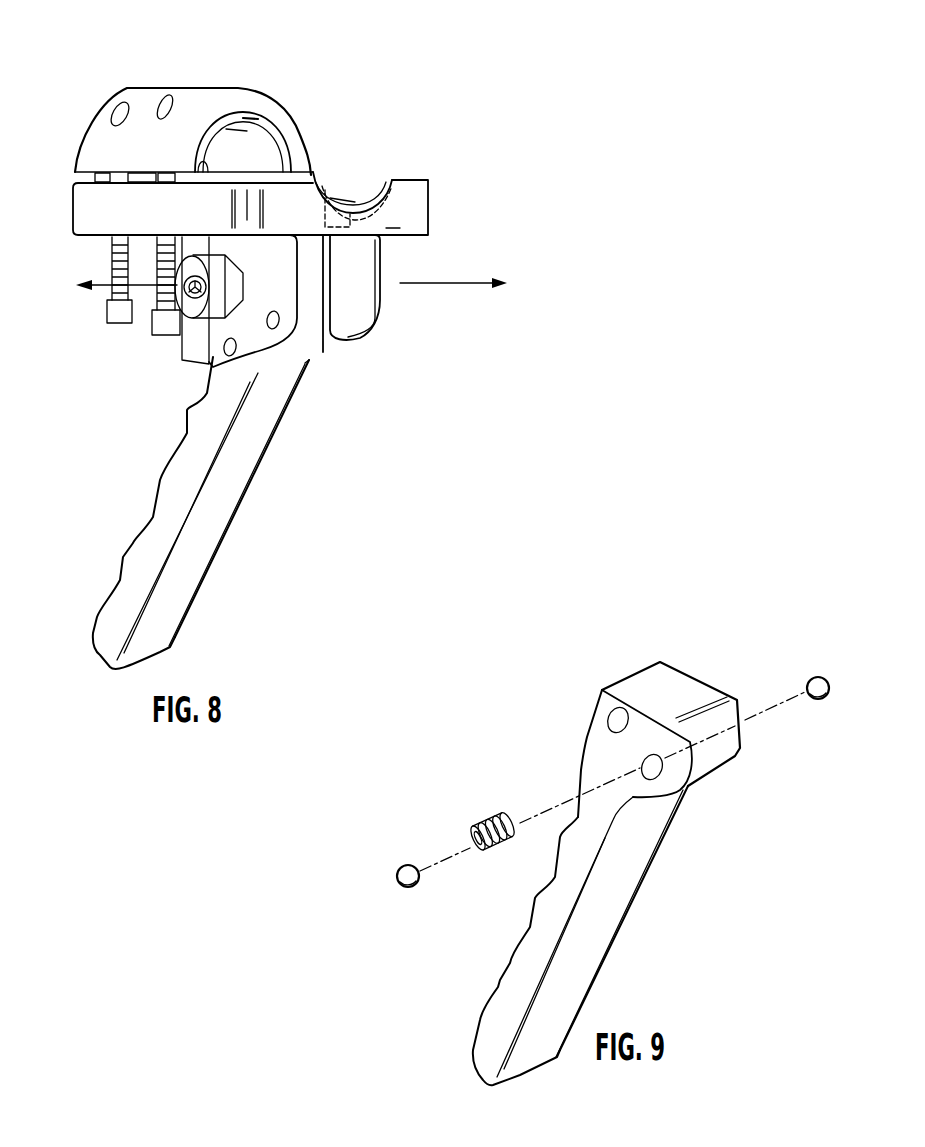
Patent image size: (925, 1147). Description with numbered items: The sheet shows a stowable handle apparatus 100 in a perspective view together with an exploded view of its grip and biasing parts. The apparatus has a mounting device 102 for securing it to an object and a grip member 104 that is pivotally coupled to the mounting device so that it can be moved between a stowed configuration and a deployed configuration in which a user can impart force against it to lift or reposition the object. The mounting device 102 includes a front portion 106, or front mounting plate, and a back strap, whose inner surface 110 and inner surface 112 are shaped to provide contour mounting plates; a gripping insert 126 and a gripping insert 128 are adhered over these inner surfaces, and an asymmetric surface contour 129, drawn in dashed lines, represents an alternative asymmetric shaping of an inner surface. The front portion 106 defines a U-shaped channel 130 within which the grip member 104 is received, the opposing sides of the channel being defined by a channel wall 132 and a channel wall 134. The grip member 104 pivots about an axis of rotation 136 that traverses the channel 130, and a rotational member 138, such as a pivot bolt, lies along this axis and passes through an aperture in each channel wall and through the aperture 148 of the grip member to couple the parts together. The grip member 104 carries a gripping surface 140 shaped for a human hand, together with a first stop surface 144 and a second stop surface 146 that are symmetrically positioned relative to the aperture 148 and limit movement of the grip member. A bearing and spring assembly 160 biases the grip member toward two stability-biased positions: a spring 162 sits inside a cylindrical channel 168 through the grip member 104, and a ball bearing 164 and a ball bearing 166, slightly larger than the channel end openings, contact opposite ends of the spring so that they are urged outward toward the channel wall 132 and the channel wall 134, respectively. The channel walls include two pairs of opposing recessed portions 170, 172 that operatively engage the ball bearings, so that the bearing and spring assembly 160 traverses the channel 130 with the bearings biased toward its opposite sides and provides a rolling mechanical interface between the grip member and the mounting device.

In FIG. 8, the stowable handle apparatus 100 is at (486, 60).
In FIG. 8, the mounting device 102 is at (489, 160).
In FIG. 8, the grip member 104 is at (204, 513).
In FIG. 9, the grip member 104 is at (612, 849).
In FIG. 8, the front portion 106 is at (390, 228).
In FIG. 8, the inner surface 110 is at (428, 208).
In FIG. 8, the inner surface 112 is at (262, 99).
In FIG. 8, the gripping insert 126 is at (346, 190).
In FIG. 8, the gripping insert 128 is at (289, 123).
In FIG. 8, the asymmetric surface contour 129 is at (372, 210).
In FIG. 8, the channel 130 is at (330, 320).
In FIG. 8, the channel wall 132 is at (302, 325).
In FIG. 8, the channel wall 134 is at (379, 315).
In FIG. 8, the axis of rotation 136 is at (465, 283).
In FIG. 8, the rotational member 138 is at (181, 345).
In FIG. 8, the gripping surface 140 is at (138, 472).
In FIG. 9, the first stop surface 144 is at (636, 715).
In FIG. 9, the second stop surface 146 is at (667, 680).
In FIG. 9, the aperture 148 is at (610, 713).
In FIG. 9, the bearing and spring assembly 160 is at (597, 754).
In FIG. 9, the spring 162 is at (490, 818).
In FIG. 9, the ball bearing 164 is at (408, 870).
In FIG. 9, the ball bearing 166 is at (815, 677).
In FIG. 9, the channel 168 is at (645, 766).
In FIG. 8, the recessed portion 170 is at (232, 355).
In FIG. 8, the recessed portion 172 is at (274, 330).